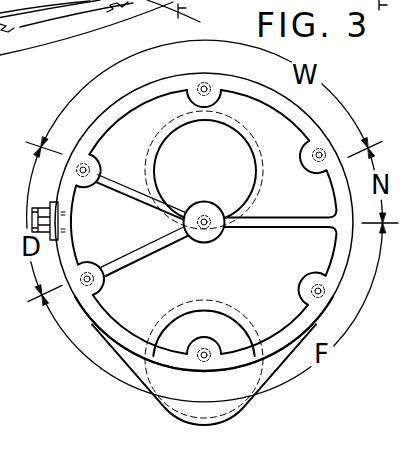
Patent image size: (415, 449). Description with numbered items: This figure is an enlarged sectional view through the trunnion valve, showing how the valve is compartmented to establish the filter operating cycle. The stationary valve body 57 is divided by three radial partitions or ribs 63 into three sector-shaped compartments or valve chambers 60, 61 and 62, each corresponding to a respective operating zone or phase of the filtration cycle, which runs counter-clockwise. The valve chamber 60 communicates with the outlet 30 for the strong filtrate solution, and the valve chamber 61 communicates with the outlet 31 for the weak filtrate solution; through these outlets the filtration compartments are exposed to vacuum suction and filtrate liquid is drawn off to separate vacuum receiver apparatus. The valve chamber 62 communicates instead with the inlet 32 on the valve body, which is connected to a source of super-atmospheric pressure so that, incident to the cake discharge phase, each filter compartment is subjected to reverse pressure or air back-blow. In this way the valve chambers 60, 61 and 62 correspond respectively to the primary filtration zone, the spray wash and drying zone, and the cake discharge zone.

The outlet 30 is at (203, 333).
The outlet 31 is at (205, 169).
The inlet 32 is at (40, 208).
The stationary valve body 57 is at (243, 72).
The valve chamber 60 is at (215, 290).
The valve chamber 61 is at (278, 153).
The valve chamber 62 is at (74, 222).
The radial partitions or ribs 63 is at (117, 181).